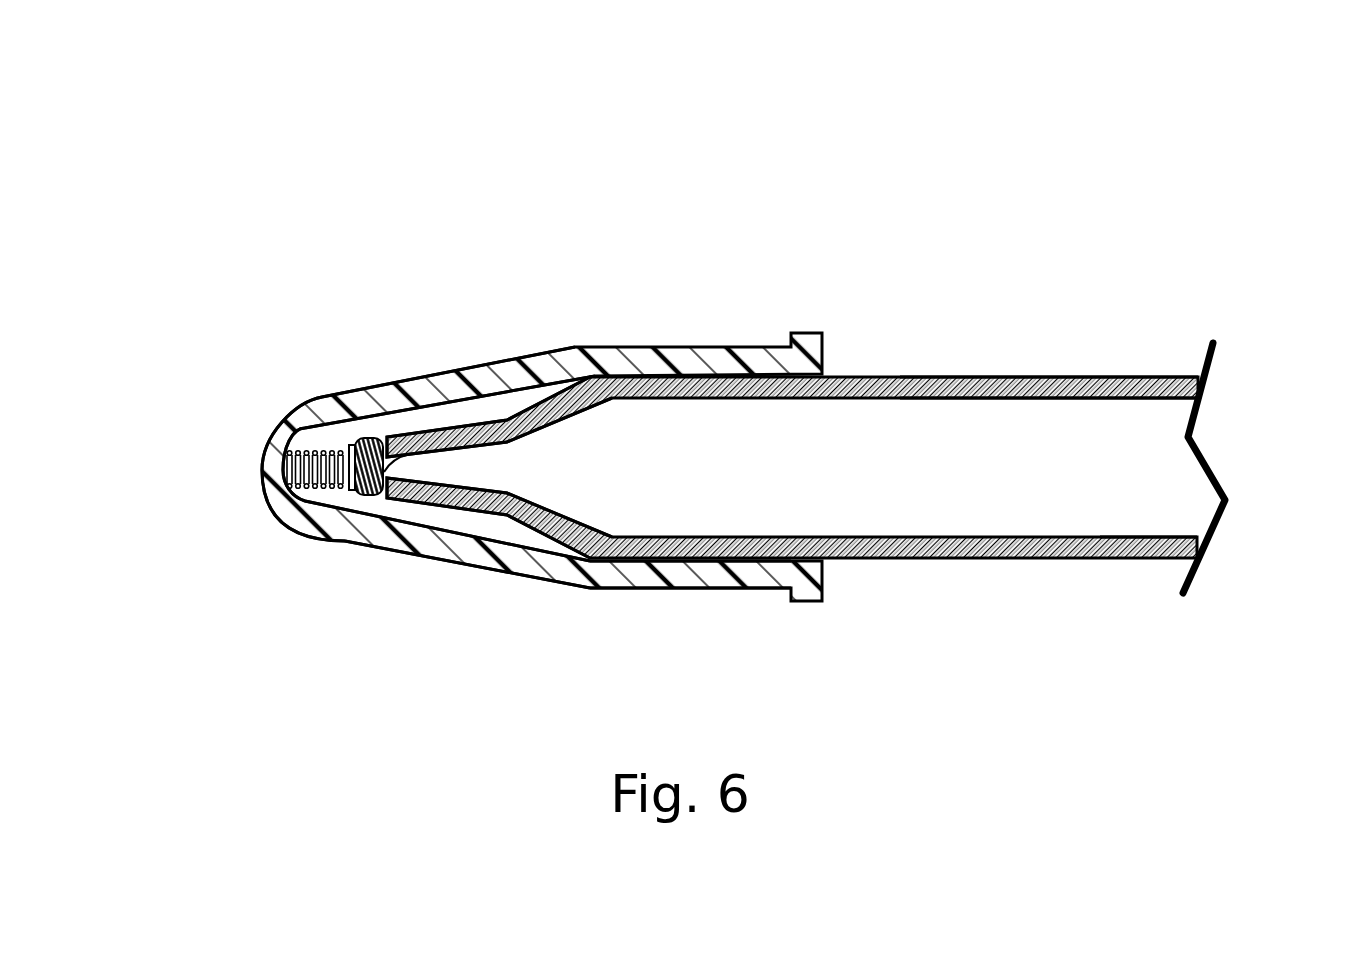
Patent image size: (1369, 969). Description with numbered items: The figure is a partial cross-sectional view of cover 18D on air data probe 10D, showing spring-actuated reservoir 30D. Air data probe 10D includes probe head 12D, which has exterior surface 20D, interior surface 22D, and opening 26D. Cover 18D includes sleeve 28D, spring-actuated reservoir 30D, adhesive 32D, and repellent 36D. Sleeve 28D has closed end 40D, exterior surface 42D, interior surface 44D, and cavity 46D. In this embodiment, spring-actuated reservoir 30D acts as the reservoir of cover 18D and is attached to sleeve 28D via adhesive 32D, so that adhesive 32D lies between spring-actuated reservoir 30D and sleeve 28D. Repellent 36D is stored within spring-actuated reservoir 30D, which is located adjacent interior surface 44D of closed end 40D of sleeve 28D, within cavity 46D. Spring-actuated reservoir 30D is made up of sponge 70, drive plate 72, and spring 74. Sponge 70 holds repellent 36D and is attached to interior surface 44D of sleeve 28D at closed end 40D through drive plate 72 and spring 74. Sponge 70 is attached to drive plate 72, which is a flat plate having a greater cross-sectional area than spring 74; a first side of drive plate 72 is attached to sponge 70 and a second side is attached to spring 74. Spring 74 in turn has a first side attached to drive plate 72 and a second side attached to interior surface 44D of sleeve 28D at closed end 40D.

The air data probe 10D is at (1024, 162).
The probe head 12D is at (1112, 335).
The cover 18D is at (622, 290).
The exterior surface 20D is at (1027, 560).
The interior surface 22D is at (1155, 537).
The opening 26D is at (438, 432).
The sleeve 28D is at (718, 572).
The spring-actuated reservoir 30D is at (228, 338).
The adhesive 32D is at (283, 462).
The repellent 36D is at (372, 497).
The closed end 40D is at (261, 466).
The exterior surface 42D is at (522, 573).
The interior surface 44D is at (527, 397).
The cavity 46D is at (515, 530).
The sponge 70 is at (369, 438).
The drive plate 72 is at (352, 490).
The spring 74 is at (312, 490).